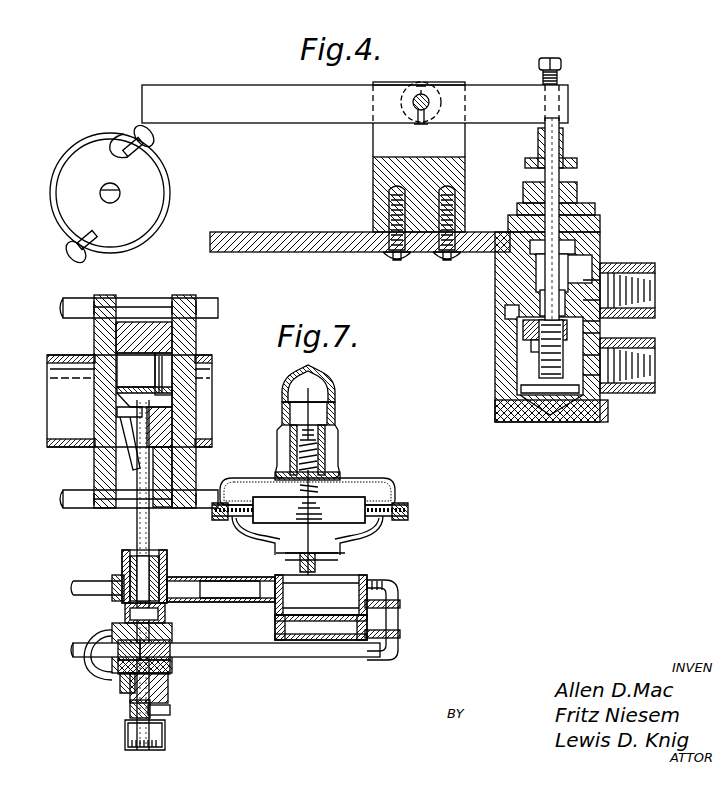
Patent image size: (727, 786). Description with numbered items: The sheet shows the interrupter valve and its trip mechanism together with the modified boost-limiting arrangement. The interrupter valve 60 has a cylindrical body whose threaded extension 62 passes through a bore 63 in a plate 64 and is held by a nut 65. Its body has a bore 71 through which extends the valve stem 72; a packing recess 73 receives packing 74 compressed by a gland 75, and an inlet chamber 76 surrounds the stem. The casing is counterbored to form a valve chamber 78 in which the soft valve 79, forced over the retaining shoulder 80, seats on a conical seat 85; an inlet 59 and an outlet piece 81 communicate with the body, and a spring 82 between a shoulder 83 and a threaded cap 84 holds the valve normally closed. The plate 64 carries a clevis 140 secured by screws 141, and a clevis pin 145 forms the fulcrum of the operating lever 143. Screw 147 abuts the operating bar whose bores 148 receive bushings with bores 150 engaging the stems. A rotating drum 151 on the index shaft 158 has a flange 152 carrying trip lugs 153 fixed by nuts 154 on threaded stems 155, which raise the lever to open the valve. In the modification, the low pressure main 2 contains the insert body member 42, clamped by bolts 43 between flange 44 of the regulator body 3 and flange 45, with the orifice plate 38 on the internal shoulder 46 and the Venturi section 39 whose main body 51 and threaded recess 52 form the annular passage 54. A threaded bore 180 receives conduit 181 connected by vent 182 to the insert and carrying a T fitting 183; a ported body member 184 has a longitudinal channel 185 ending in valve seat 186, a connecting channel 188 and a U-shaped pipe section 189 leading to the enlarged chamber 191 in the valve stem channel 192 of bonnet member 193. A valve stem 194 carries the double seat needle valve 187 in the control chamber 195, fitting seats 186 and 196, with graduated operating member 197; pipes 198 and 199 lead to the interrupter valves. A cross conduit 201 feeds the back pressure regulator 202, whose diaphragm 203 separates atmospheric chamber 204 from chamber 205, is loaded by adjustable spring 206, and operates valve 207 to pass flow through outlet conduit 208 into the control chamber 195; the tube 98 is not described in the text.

In FIG. 4, the rotating drum 151 is at (82, 160).
In FIG. 4, the flange 152 is at (52, 184).
In FIG. 4, the trip lugs 153 is at (100, 264).
In FIG. 4, the nuts 154 is at (142, 152).
In FIG. 4, the threaded stems 155 is at (115, 138).
In FIG. 4, the index shaft 158 is at (108, 194).
In FIG. 4, the operating lever 143 is at (290, 108).
In FIG. 4, the clevis 140 is at (373, 168).
In FIG. 4, the clevis pin 145 is at (430, 94).
In FIG. 4, the screws 141 is at (450, 262).
In FIG. 4, the plate 64 is at (345, 245).
In FIG. 4, the bore 63 is at (600, 242).
In FIG. 4, the nut 65 is at (590, 222).
In FIG. 4, the threaded extension 62 is at (580, 208).
In FIG. 4, the gland 75 is at (523, 188).
In FIG. 4, the valve stem 72 is at (577, 174).
In FIG. 4, the bores 150 is at (540, 147).
In FIG. 4, the bore 71 is at (592, 262).
In FIG. 4, the packing 74 is at (530, 250).
In FIG. 4, the packing recess 73 is at (540, 275).
In FIG. 4, the inlet chamber 76 is at (542, 300).
In FIG. 4, the retaining shoulder 80 is at (505, 312).
In FIG. 4, the interrupter valve 60 is at (532, 366).
In FIG. 4, the seat 85 is at (523, 328).
In FIG. 4, the valve chamber 78 is at (531, 345).
In FIG. 4, the shoulder 83 is at (540, 355).
In FIG. 4, the spring 82 is at (521, 388).
In FIG. 4, the threaded cap 84 is at (560, 422).
In FIG. 4, the inlet 59 is at (655, 276).
In FIG. 4, the outlet piece 81 is at (628, 393).
In FIG. 4, the valve 79 is at (600, 327).
In FIG. 4, the bores 148 is at (566, 160).
In FIG. 4, the screw 147 is at (561, 62).
In FIG. 7, the regulator body 3 is at (70, 355).
In FIG. 7, the orifice plate 38 is at (196, 369).
In FIG. 7, the Venturi section 39 is at (196, 385).
In FIG. 7, the flange 44 is at (95, 463).
In FIG. 7, the flange 45 is at (195, 345).
In FIG. 7, the bolts 43 is at (205, 305).
In FIG. 7, the body member 42 is at (160, 335).
In FIG. 7, the low pressure main 2 is at (215, 360).
In FIG. 7, the main body 51 is at (136, 370).
In FIG. 7, the annular passage 54 is at (149, 374).
In FIG. 7, the threaded recess 52 is at (117, 390).
In FIG. 7, the vent 182 is at (133, 455).
In FIG. 7, the internal shoulder 46 is at (165, 460).
In FIG. 7, the threaded bore 180 is at (172, 480).
In FIG. 7, the sensing tube 98 is at (150, 528).
In FIG. 7, the T fitting 183 is at (130, 552).
In FIG. 7, the conduit 181 is at (160, 540).
In FIG. 7, the cross conduit 201 is at (230, 575).
In FIG. 7, the pipe 199 is at (92, 580).
In FIG. 7, the longitudinal channel 185 is at (125, 608).
In FIG. 7, the connecting channel 188 is at (135, 616).
In FIG. 7, the valve seat 186 is at (172, 628).
In FIG. 7, the pipe 198 is at (73, 649).
In FIG. 7, the U-shaped pipe section 189 is at (88, 638).
In FIG. 7, the control chamber 195 is at (118, 650).
In FIG. 7, the double seat needle valve 187 is at (118, 664).
In FIG. 7, the seat 196 is at (122, 684).
In FIG. 7, the valve stem channel 192 is at (170, 672).
In FIG. 7, the enlarged chamber 191 is at (168, 690).
In FIG. 7, the bonnet member 193 is at (130, 705).
In FIG. 7, the valve stem 194 is at (170, 712).
In FIG. 7, the valve operating member 197 is at (165, 740).
In FIG. 7, the ported body member 184 is at (275, 630).
In FIG. 7, the valve 207 is at (320, 570).
In FIG. 7, the outlet conduit 208 is at (385, 590).
In FIG. 7, the chamber 205 is at (340, 558).
In FIG. 7, the back pressure regulator 202 is at (395, 492).
In FIG. 7, the diaphragm 203 is at (380, 508).
In FIG. 7, the chamber 204 is at (352, 490).
In FIG. 7, the adjustable spring 206 is at (288, 470).